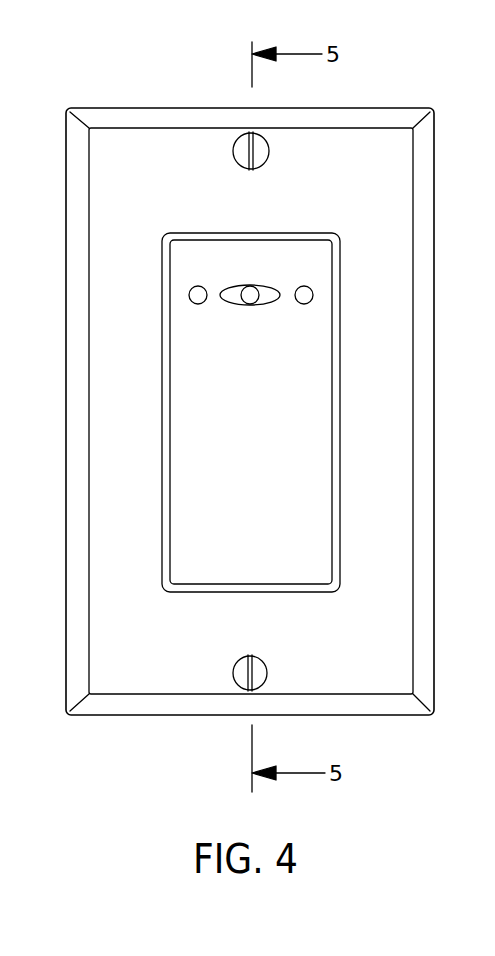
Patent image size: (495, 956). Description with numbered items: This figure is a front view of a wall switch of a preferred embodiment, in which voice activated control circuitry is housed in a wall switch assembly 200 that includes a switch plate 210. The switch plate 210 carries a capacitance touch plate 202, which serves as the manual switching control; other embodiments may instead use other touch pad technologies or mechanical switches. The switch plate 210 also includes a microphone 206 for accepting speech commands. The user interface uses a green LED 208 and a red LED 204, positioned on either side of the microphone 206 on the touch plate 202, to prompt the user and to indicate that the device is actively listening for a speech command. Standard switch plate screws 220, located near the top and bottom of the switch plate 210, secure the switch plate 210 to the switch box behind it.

The wall switch assembly 200 is at (137, 86).
The capacitance touch plate 202 is at (312, 393).
The red LED 204 is at (313, 293).
The microphone 206 is at (251, 288).
The green LED 208 is at (190, 292).
The switch plate 210 is at (434, 564).
The switch plate screws 220 is at (240, 140).